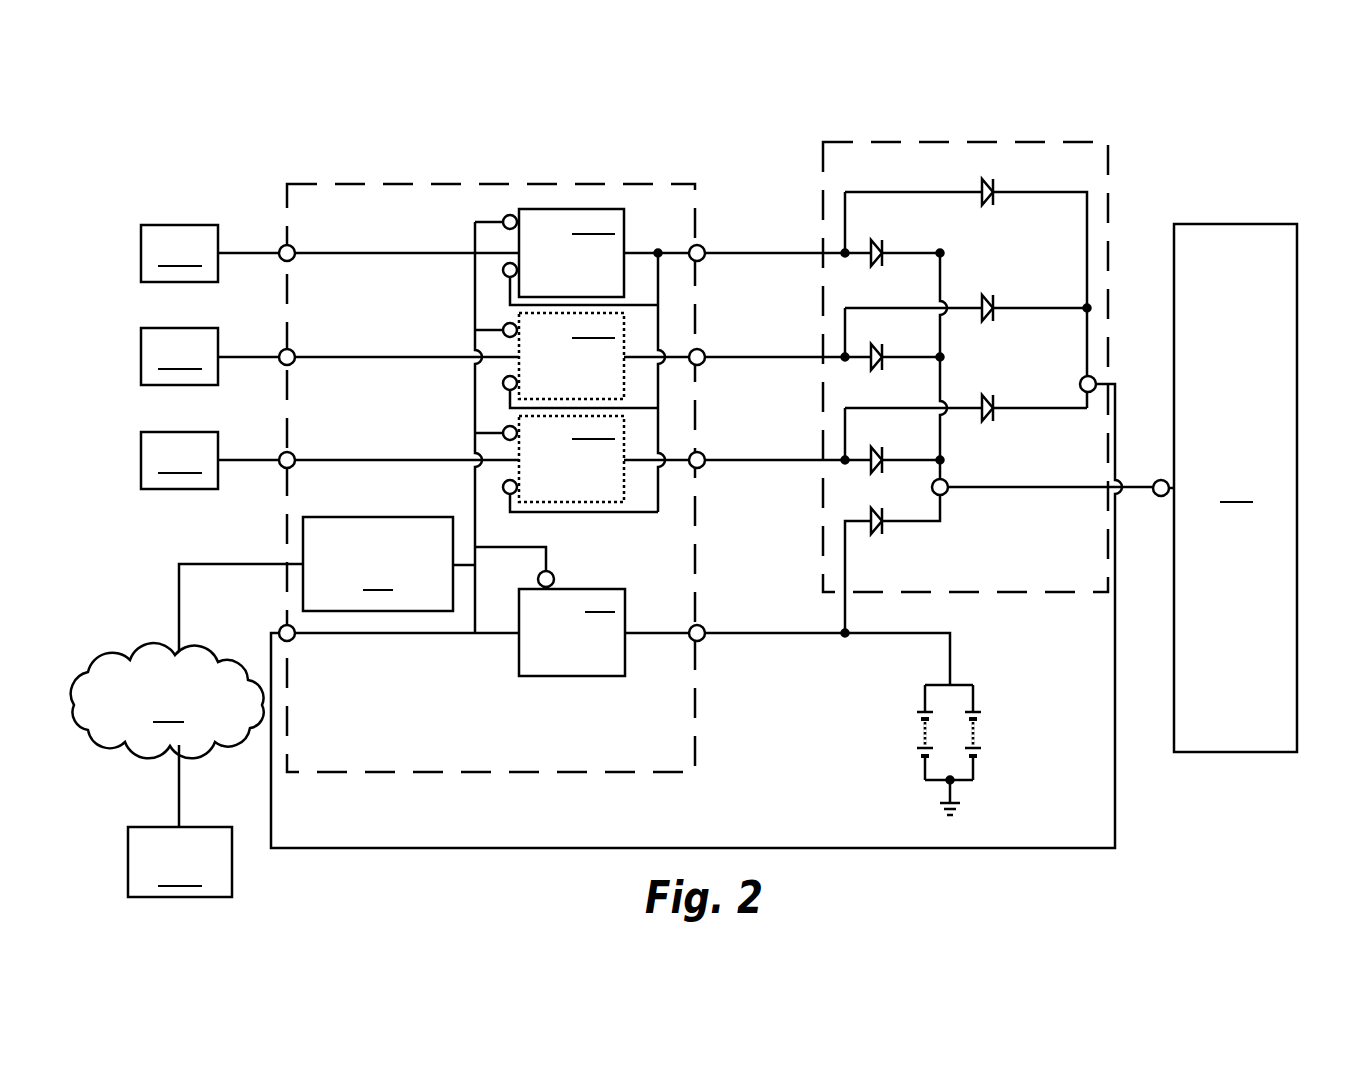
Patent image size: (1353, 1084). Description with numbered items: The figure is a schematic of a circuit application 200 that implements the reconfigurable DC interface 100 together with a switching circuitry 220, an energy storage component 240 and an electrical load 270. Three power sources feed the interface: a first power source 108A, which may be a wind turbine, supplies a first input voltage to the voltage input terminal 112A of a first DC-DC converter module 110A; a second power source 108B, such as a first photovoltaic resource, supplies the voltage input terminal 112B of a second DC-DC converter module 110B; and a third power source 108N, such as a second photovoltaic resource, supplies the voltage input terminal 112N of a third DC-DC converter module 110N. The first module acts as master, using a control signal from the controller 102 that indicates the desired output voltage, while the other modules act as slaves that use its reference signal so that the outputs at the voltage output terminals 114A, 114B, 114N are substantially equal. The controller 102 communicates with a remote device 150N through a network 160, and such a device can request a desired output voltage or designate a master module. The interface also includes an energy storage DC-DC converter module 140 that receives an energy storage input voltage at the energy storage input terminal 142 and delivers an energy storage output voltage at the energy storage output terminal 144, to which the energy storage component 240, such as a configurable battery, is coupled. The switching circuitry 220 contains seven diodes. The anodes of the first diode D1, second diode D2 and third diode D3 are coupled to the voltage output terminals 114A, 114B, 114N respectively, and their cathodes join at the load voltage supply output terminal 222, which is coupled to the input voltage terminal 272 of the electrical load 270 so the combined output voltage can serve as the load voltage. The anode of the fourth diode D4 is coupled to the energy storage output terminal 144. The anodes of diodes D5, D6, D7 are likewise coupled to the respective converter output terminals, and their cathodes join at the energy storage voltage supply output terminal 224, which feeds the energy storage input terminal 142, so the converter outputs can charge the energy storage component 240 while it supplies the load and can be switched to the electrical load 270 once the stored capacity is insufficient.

The circuit application 200 is at (1129, 106).
The reconfigurable DC interface 100 is at (545, 193).
The switching circuitry 220 is at (847, 151).
The first power source 108A is at (179, 253).
The second power source 108B is at (179, 356).
The third power source 108N is at (179, 460).
The voltage input terminal 112A is at (281, 247).
The voltage input terminal 112B is at (281, 351).
The voltage input terminal 112N is at (281, 454).
The first DC-DC converter module 110A is at (566, 257).
The second DC-DC converter module 110B is at (566, 360).
The third DC-DC converter module 110N is at (566, 464).
The voltage output terminal 114A is at (703, 246).
The voltage output terminal 114B is at (703, 350).
The voltage output terminal 114N is at (703, 453).
The controller 102 is at (366, 584).
The energy storage DC-DC converter module 140 is at (572, 632).
The energy storage input terminal 142 is at (281, 627).
The energy storage output terminal 144 is at (703, 626).
The first diode D1 is at (883, 240).
The second diode D2 is at (883, 344).
The third diode D3 is at (883, 448).
The fourth diode D4 is at (883, 536).
The diode D5 is at (993, 177).
The diode D6 is at (993, 296).
The diode D7 is at (993, 396).
The load voltage supply output terminal 222 is at (947, 493).
The energy storage voltage supply output terminal 224 is at (1083, 377).
The input voltage terminal 272 is at (1156, 481).
The electrical load 270 is at (1235, 488).
The energy storage component 240 is at (968, 772).
The network 160 is at (167, 700).
The device 150N is at (180, 821).